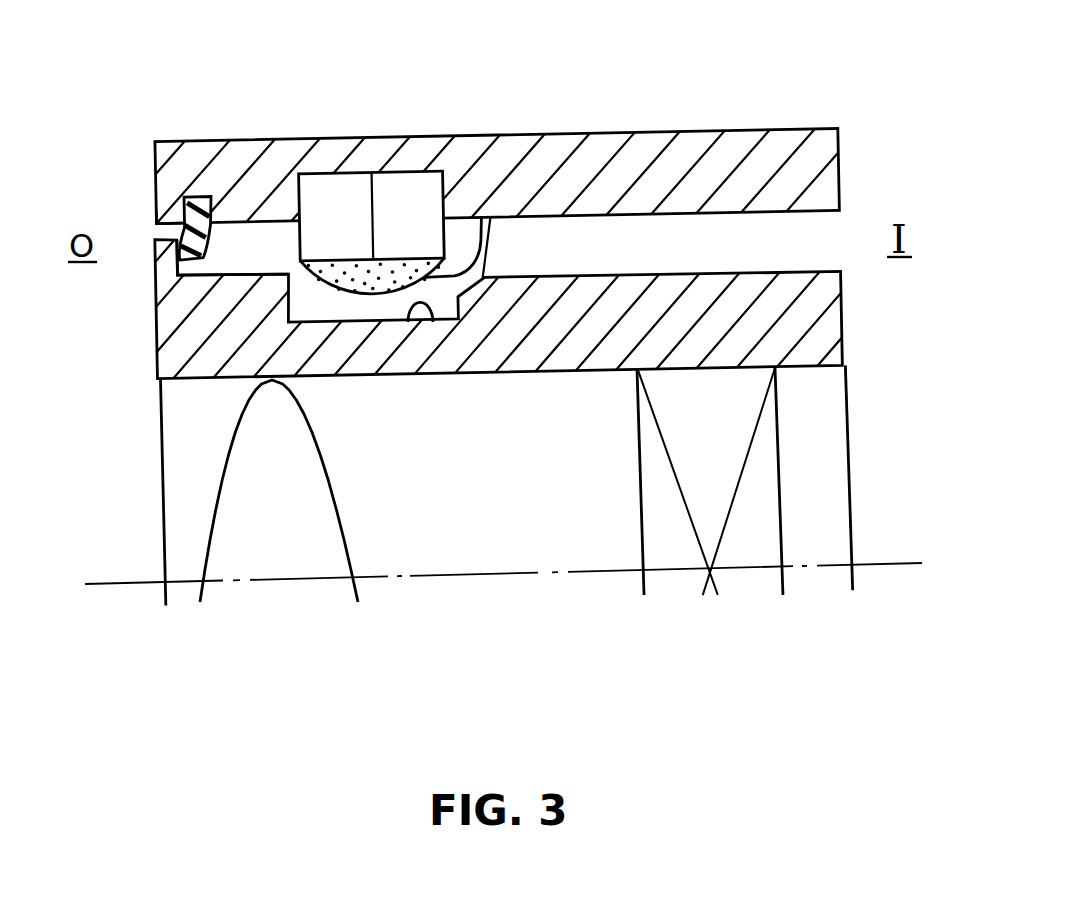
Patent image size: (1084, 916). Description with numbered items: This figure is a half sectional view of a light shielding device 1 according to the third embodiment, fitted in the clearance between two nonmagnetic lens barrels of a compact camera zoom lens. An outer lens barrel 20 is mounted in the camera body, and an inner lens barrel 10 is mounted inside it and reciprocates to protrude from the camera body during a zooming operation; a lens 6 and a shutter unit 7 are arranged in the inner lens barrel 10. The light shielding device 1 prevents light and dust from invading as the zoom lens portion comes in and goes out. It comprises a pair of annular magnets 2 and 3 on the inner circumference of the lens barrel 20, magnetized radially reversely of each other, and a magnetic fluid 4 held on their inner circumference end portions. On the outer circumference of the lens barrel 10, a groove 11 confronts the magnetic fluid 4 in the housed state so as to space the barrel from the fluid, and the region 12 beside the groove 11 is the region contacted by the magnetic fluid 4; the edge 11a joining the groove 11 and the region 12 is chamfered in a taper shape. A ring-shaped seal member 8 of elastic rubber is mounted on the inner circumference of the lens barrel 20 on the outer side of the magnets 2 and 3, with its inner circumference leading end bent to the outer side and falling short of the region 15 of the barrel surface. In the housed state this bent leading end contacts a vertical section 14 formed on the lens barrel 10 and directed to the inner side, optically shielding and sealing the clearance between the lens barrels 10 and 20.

The light shielding device 1 is at (371, 118).
The annular magnet 2 is at (362, 160).
The annular magnet 3 is at (370, 176).
The magnetic fluid 4 is at (484, 217).
The lens 6 is at (285, 557).
The shutter unit 7 is at (751, 555).
The seal member 8 is at (203, 194).
The lens barrel 10 is at (806, 326).
The groove 11 is at (429, 321).
The edge of the groove 11a is at (493, 217).
The region 12 is at (674, 275).
The vertical section 14 is at (166, 208).
The region 15 is at (246, 268).
The outer lens barrel 20 is at (462, 135).